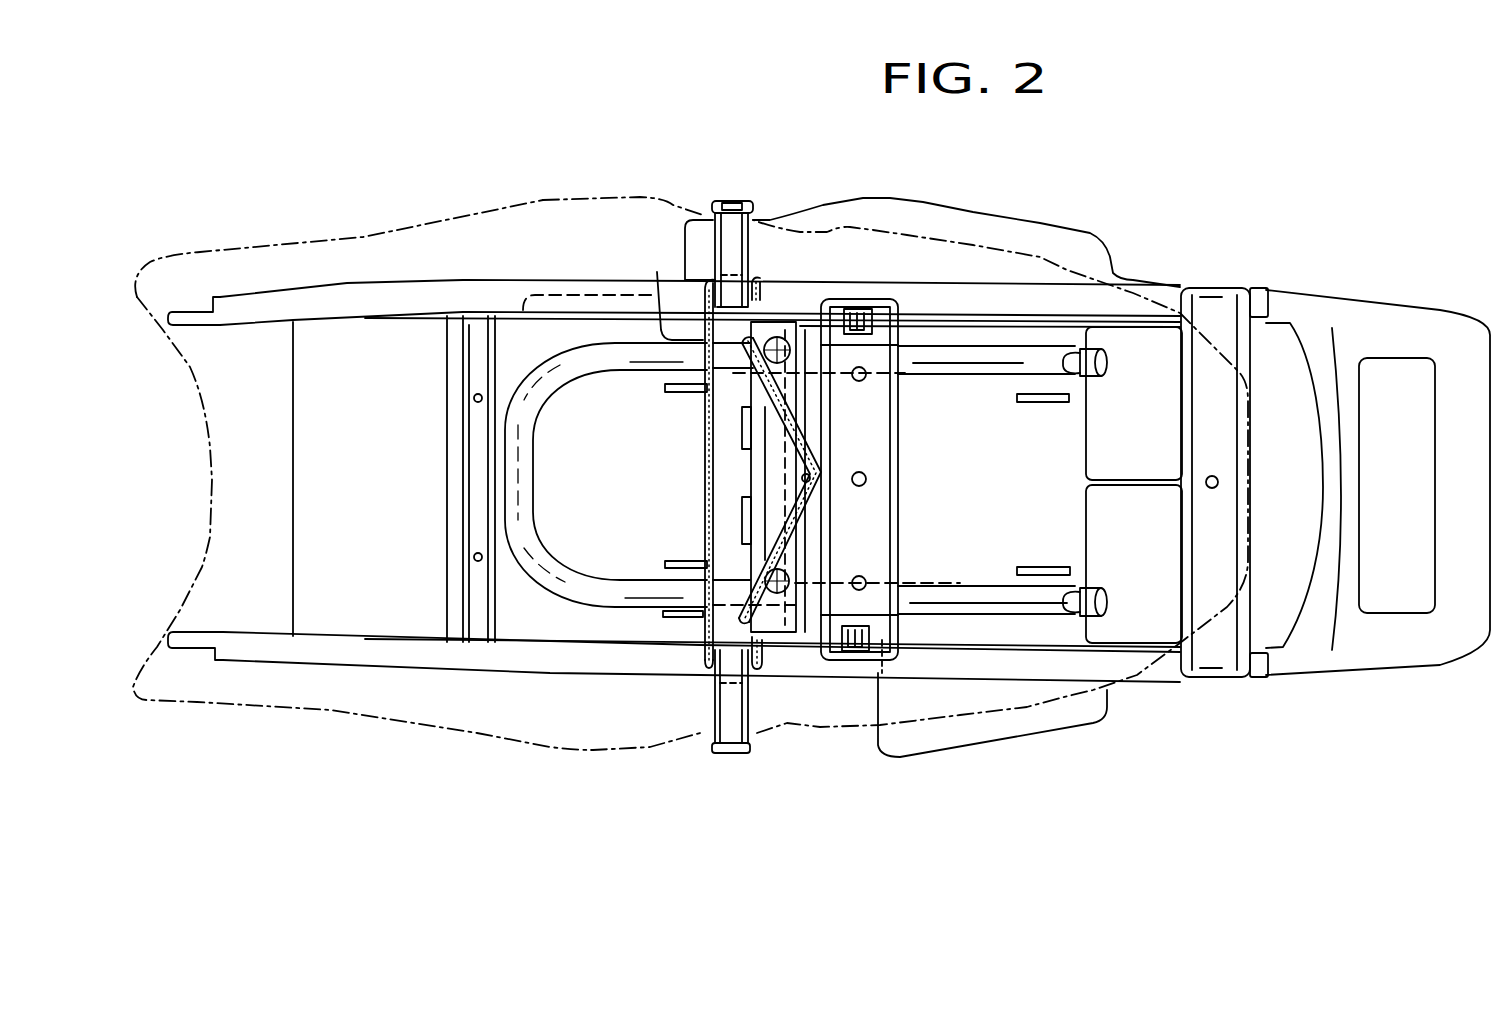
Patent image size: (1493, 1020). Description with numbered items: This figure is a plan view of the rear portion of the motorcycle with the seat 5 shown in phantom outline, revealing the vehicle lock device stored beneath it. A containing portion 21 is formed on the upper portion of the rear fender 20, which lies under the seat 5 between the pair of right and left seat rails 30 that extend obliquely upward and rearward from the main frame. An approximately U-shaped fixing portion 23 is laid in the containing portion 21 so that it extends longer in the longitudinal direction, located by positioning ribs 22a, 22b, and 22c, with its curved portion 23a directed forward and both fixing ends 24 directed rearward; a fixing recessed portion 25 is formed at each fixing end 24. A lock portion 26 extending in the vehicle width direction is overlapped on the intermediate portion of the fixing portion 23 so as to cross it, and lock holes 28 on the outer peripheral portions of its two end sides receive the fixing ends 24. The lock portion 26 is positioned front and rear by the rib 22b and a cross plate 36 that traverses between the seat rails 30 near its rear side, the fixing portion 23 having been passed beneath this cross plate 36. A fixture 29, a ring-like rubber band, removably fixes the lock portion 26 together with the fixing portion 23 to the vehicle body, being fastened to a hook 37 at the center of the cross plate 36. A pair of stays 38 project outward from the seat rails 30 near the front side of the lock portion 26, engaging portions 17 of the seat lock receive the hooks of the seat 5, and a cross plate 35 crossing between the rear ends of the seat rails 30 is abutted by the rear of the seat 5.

The seat 5 is at (541, 205).
The engaging portions 17 is at (850, 310).
The rear fender 20 is at (318, 443).
The containing portion 21 is at (629, 477).
The positioning rib 22a is at (657, 275).
The positioning rib 22b is at (742, 513).
The positioning rib 22c is at (1027, 402).
The fixing portion 23 is at (935, 355).
The curved portion 23a is at (533, 500).
The fixing ends 24 is at (1108, 365).
The fixing recessed portion 25 is at (1075, 357).
The lock portion 26 is at (763, 395).
The lock holes 28 is at (776, 345).
The fixture 29 is at (742, 447).
The seat rails 30 is at (412, 290).
The cross plate 35 is at (1238, 483).
The cross plate 36 is at (873, 538).
The hook 37 is at (810, 463).
The stays 38 is at (745, 200).